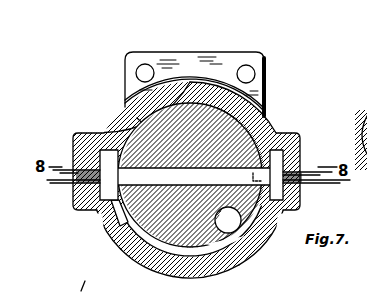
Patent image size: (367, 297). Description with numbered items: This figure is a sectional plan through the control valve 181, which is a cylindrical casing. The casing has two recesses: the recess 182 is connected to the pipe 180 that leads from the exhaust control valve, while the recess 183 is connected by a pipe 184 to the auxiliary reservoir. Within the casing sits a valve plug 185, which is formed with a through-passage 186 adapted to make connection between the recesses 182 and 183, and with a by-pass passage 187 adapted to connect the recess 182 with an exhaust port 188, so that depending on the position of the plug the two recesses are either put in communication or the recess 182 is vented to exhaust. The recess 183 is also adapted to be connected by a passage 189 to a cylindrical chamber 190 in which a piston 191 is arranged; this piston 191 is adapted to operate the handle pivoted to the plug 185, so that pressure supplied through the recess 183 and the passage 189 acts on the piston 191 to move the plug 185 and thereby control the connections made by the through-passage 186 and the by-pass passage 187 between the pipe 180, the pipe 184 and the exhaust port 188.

The pipe 180 is at (310, 190).
The control valve 181 is at (194, 80).
The recess 182 is at (304, 149).
The recess 183 is at (99, 212).
The pipe 184 is at (62, 166).
The valve plug 185 is at (123, 116).
The through-passage 186 is at (165, 175).
The by-pass passage 187 is at (266, 116).
The exhaust port 188 is at (218, 266).
The passage 189 is at (150, 241).
The cylindrical chamber 190 is at (258, 233).
The piston 191 is at (225, 226).